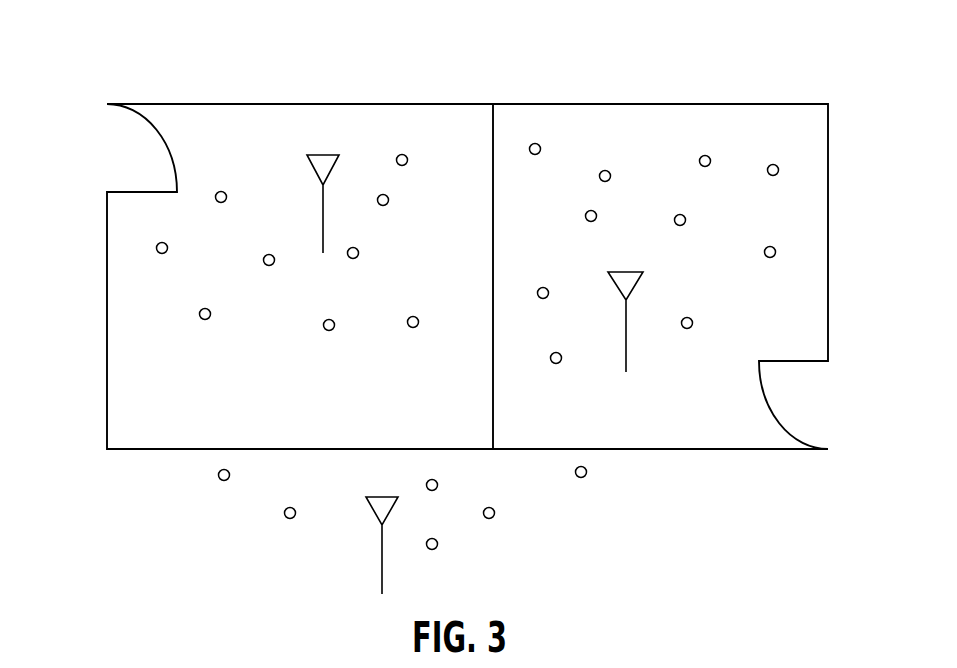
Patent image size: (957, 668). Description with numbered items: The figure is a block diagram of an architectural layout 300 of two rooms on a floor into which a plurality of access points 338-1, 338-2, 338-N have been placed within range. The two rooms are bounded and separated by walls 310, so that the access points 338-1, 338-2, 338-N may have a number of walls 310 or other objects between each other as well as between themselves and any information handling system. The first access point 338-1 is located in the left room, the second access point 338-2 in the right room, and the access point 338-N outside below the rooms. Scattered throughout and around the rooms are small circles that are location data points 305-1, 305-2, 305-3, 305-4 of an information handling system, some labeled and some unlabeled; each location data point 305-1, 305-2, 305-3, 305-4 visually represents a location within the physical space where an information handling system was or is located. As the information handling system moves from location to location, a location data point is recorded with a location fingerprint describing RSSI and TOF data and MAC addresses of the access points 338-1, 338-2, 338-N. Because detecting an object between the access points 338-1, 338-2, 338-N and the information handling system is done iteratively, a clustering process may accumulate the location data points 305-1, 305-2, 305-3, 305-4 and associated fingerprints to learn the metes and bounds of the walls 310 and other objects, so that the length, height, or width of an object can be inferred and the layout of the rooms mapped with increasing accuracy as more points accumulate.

The environment / deployment of wireless network 300 is at (112, 47).
The walls 310 is at (490, 101).
The location data point 305-1 is at (781, 168).
The location data point 305-2 is at (778, 250).
The location data point 305-3 is at (497, 511).
The location data point 305-4 is at (154, 245).
The access point 338-1 is at (318, 150).
The access point 338-2 is at (623, 267).
The access point 338-N is at (376, 491).